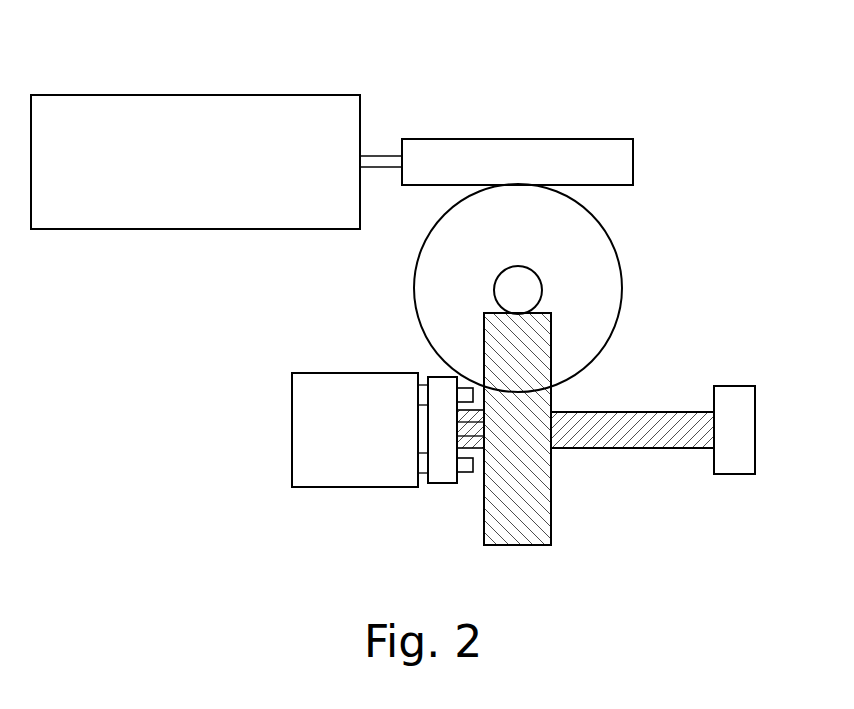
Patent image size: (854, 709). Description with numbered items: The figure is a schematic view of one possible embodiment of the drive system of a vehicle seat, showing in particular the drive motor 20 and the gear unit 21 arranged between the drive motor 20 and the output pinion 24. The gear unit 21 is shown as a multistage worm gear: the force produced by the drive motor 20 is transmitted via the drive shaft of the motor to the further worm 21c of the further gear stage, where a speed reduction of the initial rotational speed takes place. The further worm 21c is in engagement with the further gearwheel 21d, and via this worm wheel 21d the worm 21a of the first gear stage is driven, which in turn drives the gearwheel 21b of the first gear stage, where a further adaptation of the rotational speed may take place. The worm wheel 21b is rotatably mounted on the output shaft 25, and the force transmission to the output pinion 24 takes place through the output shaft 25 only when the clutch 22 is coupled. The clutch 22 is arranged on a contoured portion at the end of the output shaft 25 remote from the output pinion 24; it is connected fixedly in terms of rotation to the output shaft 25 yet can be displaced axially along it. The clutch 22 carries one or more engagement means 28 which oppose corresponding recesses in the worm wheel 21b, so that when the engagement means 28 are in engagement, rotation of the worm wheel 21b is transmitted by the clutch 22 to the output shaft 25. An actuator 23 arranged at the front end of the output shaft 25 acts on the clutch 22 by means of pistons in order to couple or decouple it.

The drive motor 20 is at (208, 175).
The gear unit 21 is at (613, 93).
The worm 21a is at (522, 295).
The gearwheel 21b is at (528, 528).
The further worm 21c is at (608, 163).
The further gearwheel 21d is at (593, 253).
The clutch 22 is at (433, 473).
The actuator 23 is at (368, 442).
The output pinion 24 is at (733, 395).
The output shaft 25 is at (655, 432).
The engagement means 28 is at (467, 470).